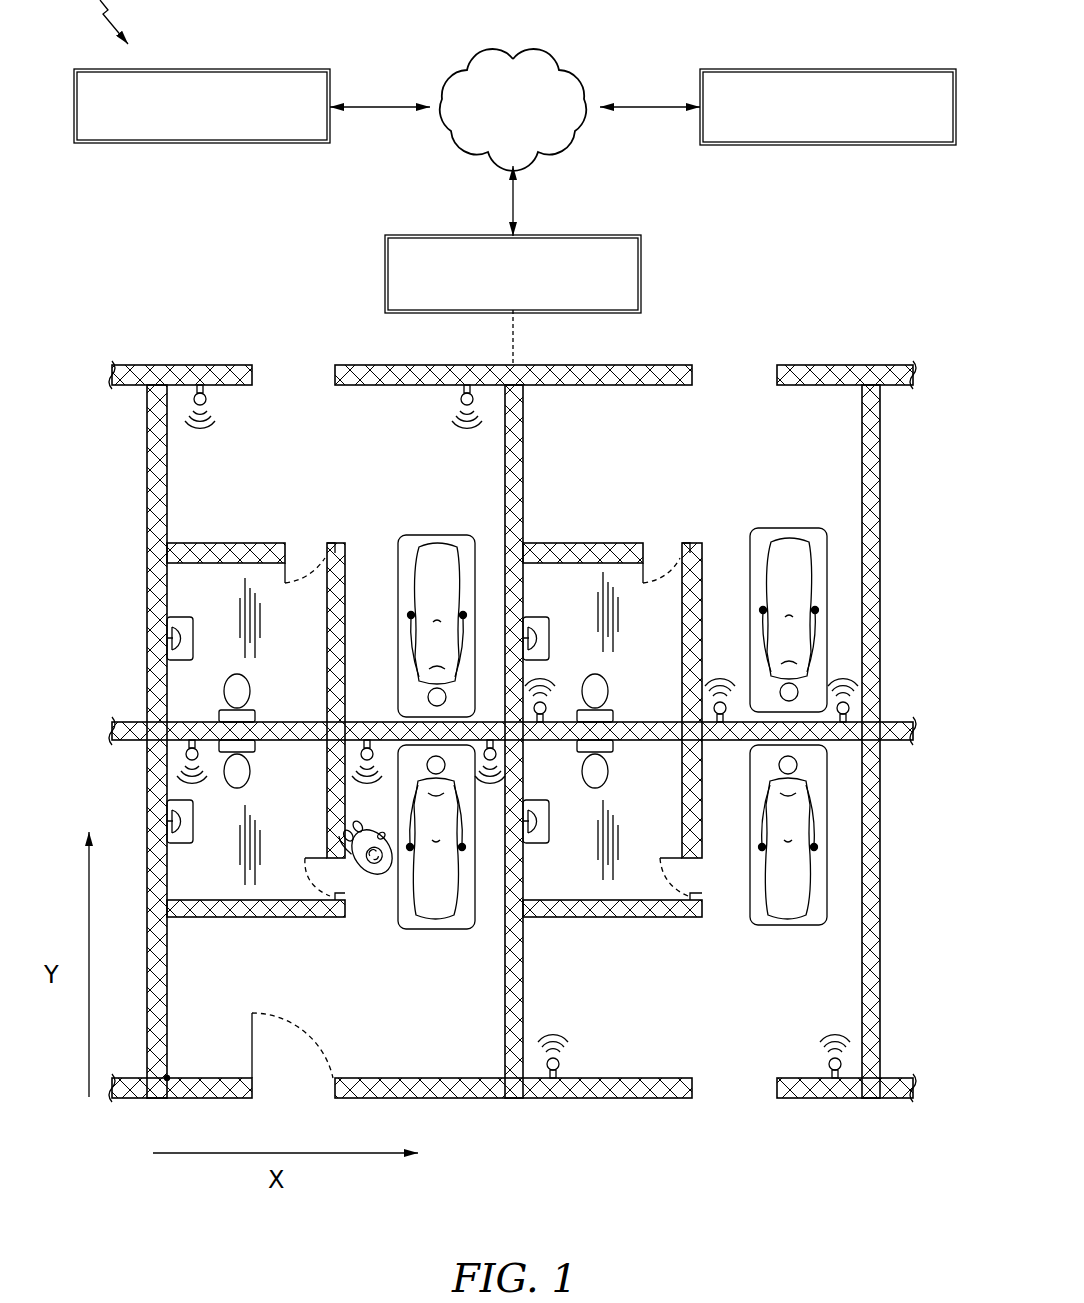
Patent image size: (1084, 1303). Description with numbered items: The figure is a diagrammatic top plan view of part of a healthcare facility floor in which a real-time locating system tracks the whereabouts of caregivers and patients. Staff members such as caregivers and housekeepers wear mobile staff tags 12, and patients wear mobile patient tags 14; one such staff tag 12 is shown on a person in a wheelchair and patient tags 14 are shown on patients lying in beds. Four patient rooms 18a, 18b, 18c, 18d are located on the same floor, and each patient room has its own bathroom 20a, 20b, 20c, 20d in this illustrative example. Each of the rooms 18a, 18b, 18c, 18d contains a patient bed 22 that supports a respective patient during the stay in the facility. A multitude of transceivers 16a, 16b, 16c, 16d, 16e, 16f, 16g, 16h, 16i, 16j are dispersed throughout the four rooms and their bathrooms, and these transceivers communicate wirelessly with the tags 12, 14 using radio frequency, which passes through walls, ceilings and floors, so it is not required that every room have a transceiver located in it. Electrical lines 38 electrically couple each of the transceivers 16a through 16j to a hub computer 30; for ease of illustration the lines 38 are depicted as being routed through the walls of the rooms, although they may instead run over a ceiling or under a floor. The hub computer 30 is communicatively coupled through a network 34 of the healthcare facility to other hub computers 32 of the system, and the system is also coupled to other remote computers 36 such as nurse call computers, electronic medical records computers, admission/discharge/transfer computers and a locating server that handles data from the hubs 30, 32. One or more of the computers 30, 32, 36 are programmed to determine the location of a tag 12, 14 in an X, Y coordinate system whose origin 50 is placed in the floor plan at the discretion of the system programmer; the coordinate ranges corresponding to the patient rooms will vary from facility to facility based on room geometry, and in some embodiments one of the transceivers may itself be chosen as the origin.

The mobile staff tag 12 is at (369, 854).
The mobile patient tag 14 is at (462, 615).
The transceiver 16a is at (186, 754).
The transceiver 16b is at (361, 755).
The transceiver 16c is at (496, 755).
The transceiver 16d is at (559, 1063).
The transceiver 16e is at (829, 1063).
The transceiver 16f is at (546, 705).
The transceiver 16g is at (714, 705).
The transceiver 16h is at (849, 705).
The transceiver 16i is at (206, 400).
The transceiver 16j is at (462, 400).
The patient room 18a is at (386, 1022).
The patient room 18b is at (726, 1008).
The patient room 18c is at (726, 470).
The patient room 18d is at (298, 482).
The bathroom 20a is at (312, 847).
The bathroom 20b is at (664, 777).
The bathroom 20c is at (676, 628).
The bathroom 20d is at (316, 690).
The patient bed 22 is at (455, 535).
The hub computer 30 is at (638, 273).
The other hub computers 32 is at (200, 140).
The network 34 is at (480, 52).
The other remote computers 36 is at (770, 72).
The electrical lines 38 is at (156, 462).
The origin 50 is at (168, 1078).